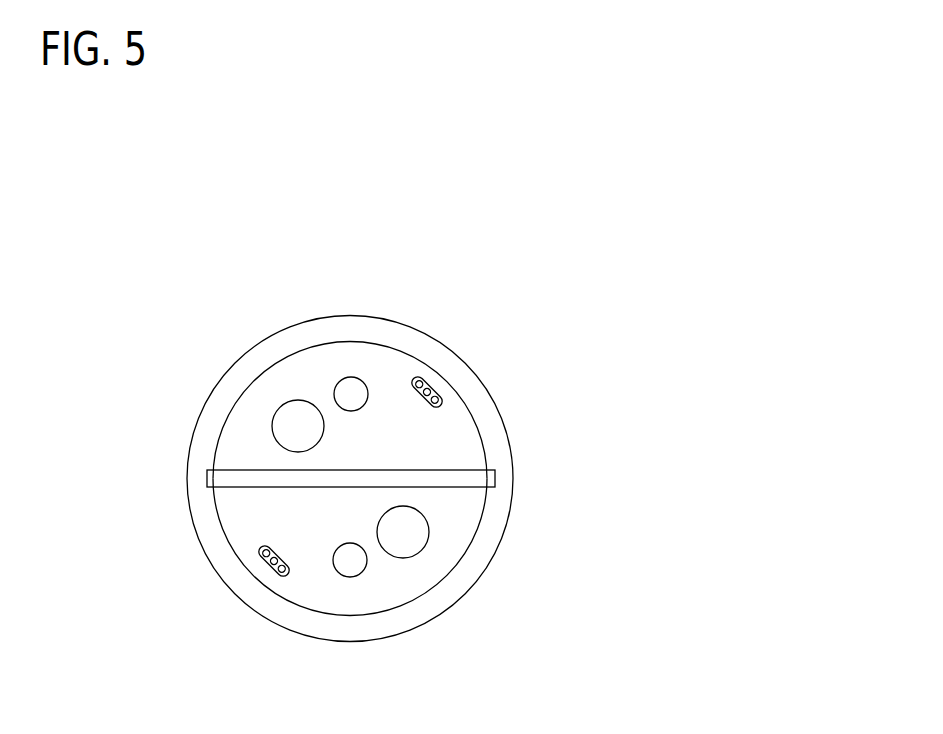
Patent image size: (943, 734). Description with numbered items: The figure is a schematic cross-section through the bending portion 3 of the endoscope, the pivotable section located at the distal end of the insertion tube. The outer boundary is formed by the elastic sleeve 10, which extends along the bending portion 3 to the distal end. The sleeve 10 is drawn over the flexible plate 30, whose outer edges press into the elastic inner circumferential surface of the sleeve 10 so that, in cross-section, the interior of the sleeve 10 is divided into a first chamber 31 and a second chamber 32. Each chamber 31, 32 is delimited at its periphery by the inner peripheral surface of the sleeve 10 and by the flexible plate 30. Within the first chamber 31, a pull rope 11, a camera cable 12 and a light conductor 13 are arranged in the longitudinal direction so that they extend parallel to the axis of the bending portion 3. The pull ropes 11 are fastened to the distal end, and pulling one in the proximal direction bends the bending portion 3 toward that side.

The bending portion 3 is at (586, 215).
The elastic sleeve 10 is at (492, 533).
The pull rope 11 is at (351, 396).
The camera cable 12 is at (299, 420).
The light conductor 13 is at (425, 388).
The flexible plate 30 is at (435, 477).
The first chamber 31 is at (240, 503).
The second chamber 32 is at (242, 435).